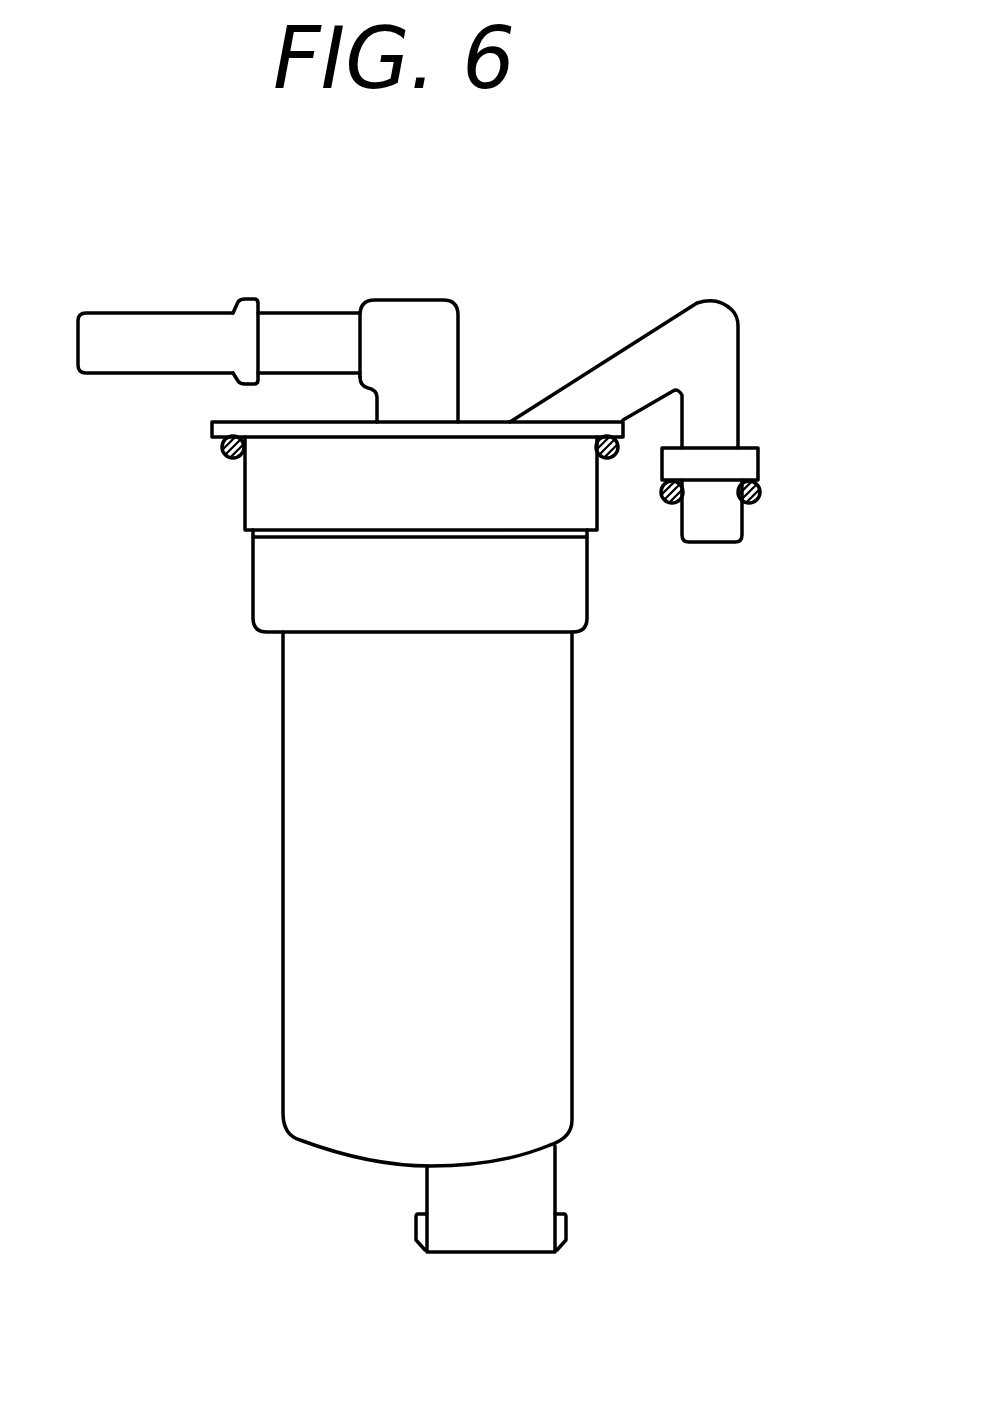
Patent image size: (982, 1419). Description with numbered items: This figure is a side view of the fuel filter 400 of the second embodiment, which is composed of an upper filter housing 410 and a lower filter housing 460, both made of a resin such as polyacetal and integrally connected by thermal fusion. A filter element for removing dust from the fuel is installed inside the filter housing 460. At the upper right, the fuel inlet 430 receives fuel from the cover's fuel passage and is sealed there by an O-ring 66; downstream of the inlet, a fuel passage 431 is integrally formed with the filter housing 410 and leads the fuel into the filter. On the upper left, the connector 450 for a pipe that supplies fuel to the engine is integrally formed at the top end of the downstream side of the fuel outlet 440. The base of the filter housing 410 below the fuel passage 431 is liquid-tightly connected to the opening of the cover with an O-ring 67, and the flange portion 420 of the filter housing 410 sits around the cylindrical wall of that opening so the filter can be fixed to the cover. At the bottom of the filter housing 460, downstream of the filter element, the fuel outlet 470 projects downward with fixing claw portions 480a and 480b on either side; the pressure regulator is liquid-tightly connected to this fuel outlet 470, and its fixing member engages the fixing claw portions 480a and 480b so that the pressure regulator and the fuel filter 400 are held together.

The fuel filter 400 is at (284, 913).
The filter housing 410 is at (243, 531).
The flange portion 420 is at (212, 432).
The fuel inlet 430 is at (724, 537).
The fuel passage 431 is at (628, 352).
The fuel outlet 440 is at (450, 356).
The connector 450 is at (135, 313).
The filter housing 460 is at (557, 815).
The fuel outlet 470 is at (502, 1240).
The fixing claw portion 480a is at (567, 1230).
The fixing claw portion 480b is at (414, 1235).
The O-ring 66 is at (760, 493).
The O-ring 67 is at (224, 460).